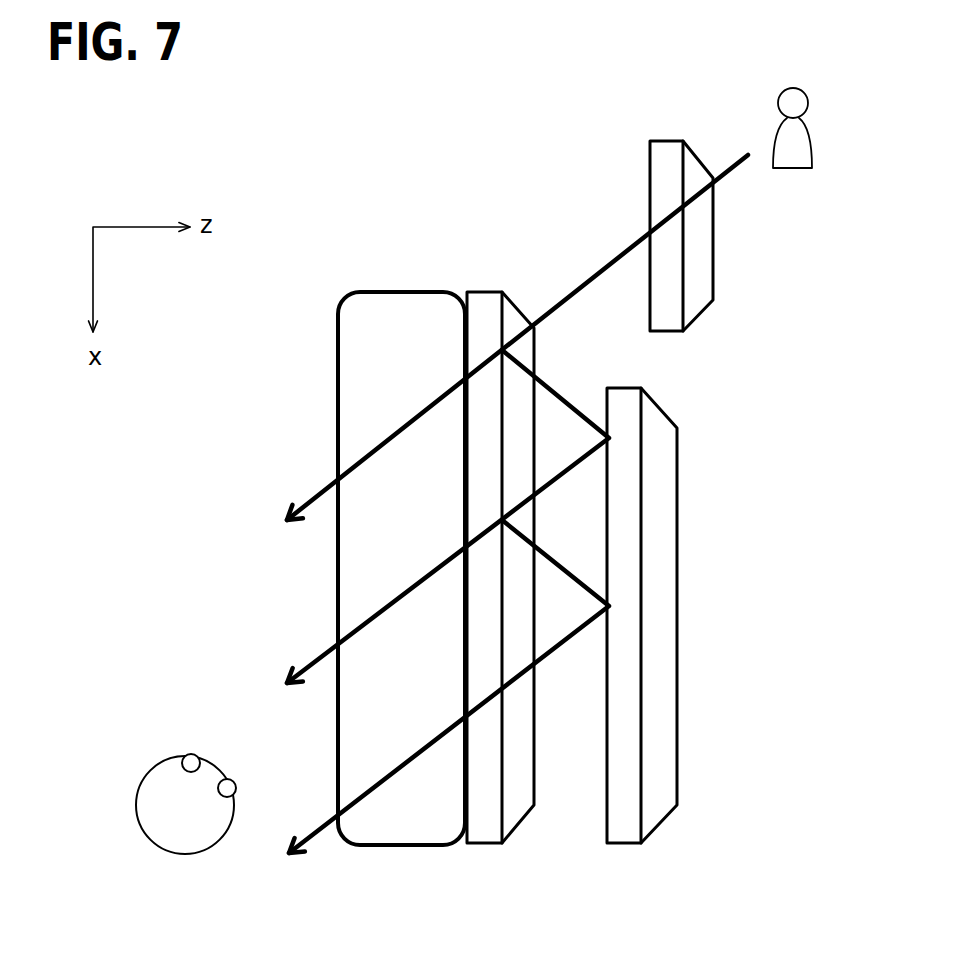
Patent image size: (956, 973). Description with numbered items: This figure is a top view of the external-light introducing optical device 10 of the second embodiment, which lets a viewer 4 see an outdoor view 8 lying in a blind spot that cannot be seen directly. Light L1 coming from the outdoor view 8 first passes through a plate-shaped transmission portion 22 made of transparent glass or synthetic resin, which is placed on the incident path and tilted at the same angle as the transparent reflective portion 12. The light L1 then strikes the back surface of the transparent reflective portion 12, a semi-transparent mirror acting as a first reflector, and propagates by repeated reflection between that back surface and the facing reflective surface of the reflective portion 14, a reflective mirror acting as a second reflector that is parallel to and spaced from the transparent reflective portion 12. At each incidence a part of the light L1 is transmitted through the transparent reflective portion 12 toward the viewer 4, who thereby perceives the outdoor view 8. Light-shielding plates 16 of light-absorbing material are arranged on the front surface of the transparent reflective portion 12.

The viewer 4 is at (193, 858).
The outdoor view 8 is at (798, 145).
The optical device 10 is at (504, 228).
The transparent reflective portion 12 is at (486, 828).
The reflective portion 14 is at (625, 828).
The light-shielding plates 16 is at (395, 830).
The transmission portion 22 is at (700, 292).
The light L1 is at (517, 489).